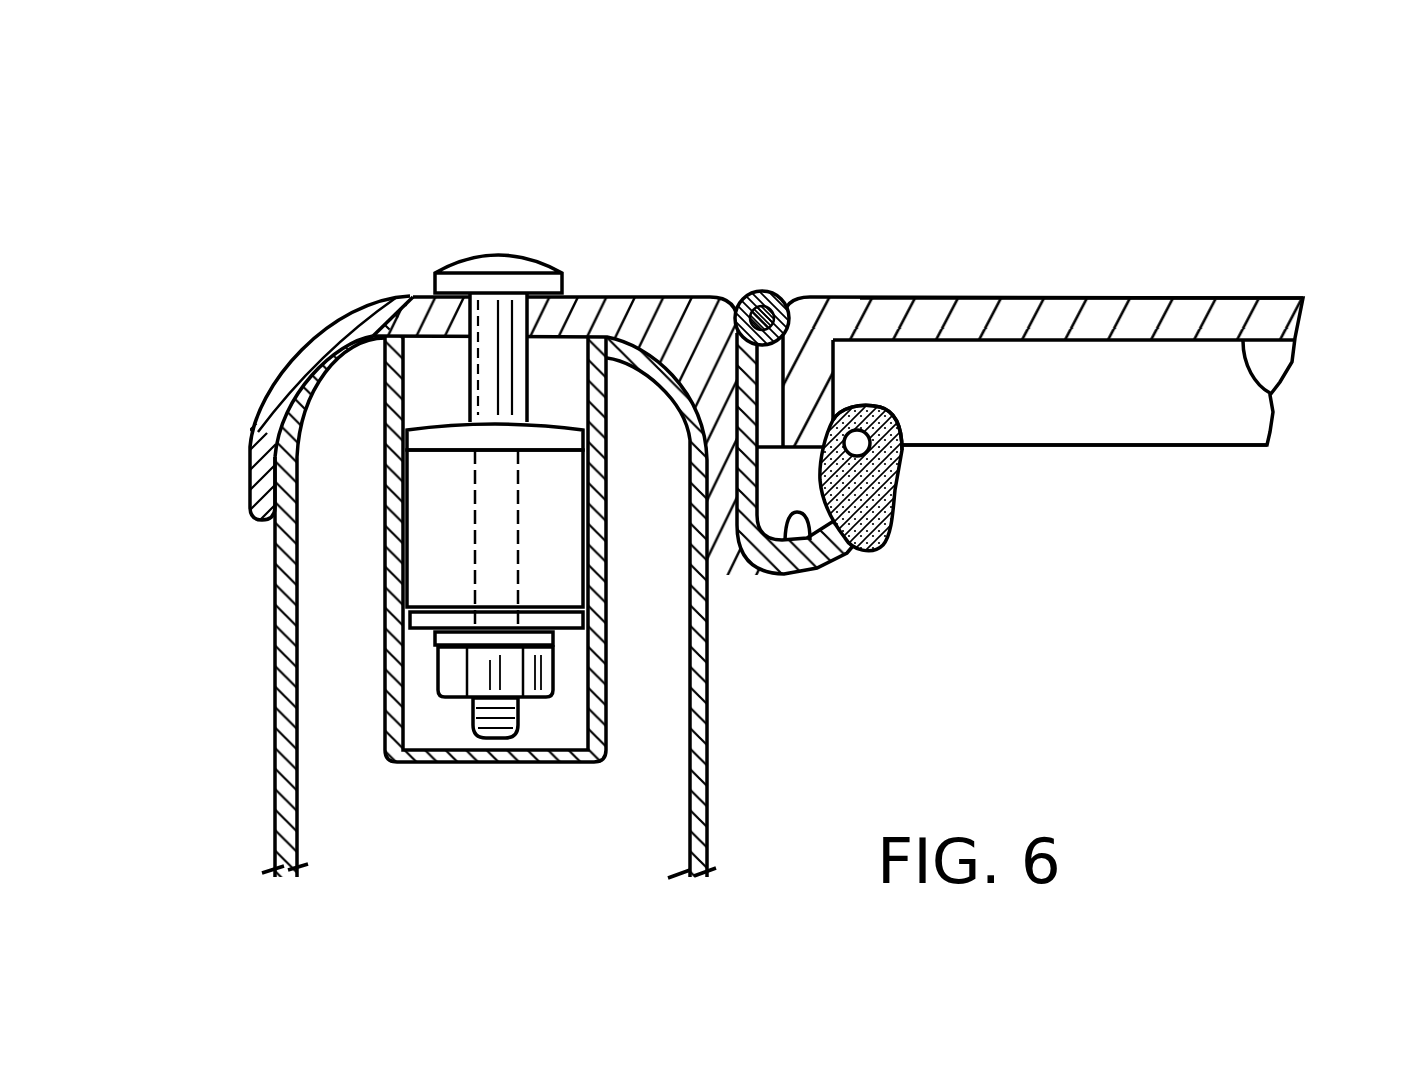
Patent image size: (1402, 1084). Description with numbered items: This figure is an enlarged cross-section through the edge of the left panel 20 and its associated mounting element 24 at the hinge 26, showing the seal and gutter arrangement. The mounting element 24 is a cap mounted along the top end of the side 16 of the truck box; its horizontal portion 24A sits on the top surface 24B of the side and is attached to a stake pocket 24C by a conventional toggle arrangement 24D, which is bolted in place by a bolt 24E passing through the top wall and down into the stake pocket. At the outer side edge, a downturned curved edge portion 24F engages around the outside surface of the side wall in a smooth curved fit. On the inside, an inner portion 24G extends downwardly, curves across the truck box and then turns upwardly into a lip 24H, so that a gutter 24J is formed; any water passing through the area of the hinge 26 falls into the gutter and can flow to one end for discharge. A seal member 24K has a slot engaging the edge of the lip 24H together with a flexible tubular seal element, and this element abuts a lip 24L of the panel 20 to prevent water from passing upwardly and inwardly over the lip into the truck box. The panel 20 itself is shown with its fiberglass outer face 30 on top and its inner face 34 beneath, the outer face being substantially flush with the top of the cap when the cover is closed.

The side 16 is at (268, 764).
The left panel 20 is at (1034, 282).
The mounting element 24 is at (266, 362).
The horizontal portion 24A is at (423, 296).
The top surface 24B is at (400, 332).
The stake pocket 24C is at (616, 712).
The toggle arrangement 24D is at (440, 548).
The bolt 24E is at (503, 250).
The downturned curved edge portion 24F is at (253, 421).
The inner portion 24G is at (714, 376).
The lip 24H is at (866, 491).
The gutter 24J is at (809, 547).
The seal member 24K is at (902, 407).
The lip of the panel 24L is at (838, 378).
The hinge 26 is at (774, 290).
The outer face 30 is at (1206, 297).
The inner face 34 is at (1274, 394).